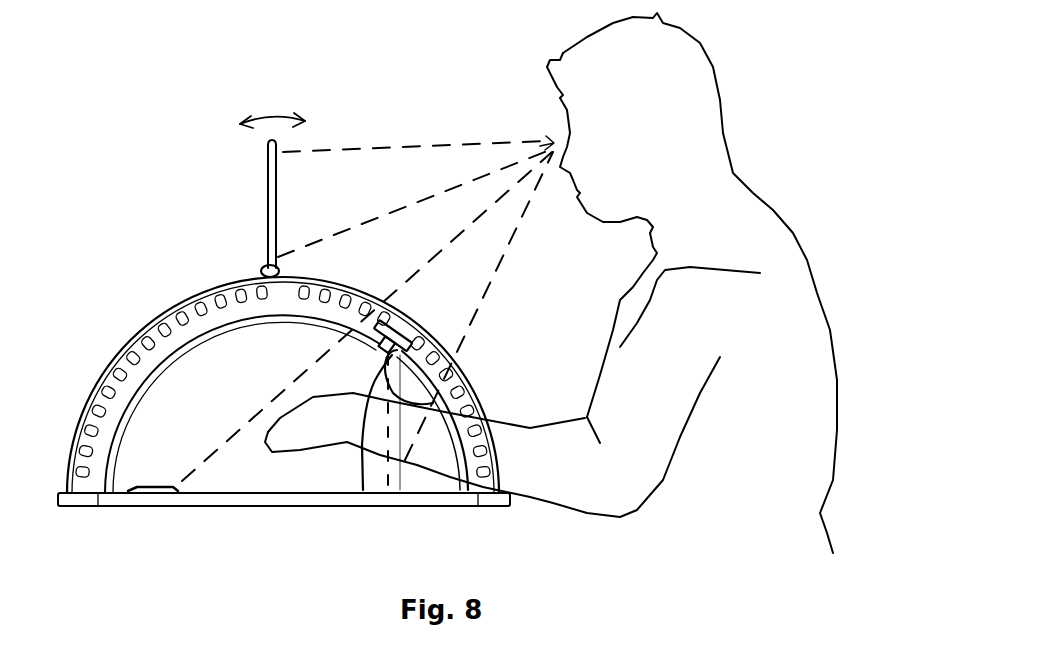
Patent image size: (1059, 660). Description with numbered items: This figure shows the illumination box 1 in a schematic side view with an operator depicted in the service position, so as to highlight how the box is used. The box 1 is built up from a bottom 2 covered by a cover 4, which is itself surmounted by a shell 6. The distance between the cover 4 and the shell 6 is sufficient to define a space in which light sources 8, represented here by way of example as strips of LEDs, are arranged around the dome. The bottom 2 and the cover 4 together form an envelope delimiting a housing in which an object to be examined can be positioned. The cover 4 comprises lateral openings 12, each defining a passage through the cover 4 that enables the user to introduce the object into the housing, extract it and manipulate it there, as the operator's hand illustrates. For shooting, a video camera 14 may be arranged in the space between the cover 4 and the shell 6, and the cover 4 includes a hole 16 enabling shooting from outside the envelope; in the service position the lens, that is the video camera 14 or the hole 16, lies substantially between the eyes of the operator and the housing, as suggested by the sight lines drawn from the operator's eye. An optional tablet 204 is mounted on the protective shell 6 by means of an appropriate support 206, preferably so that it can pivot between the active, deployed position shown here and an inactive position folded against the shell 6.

The illumination box 1 is at (133, 591).
The bottom 2 is at (222, 507).
The cover 4 is at (137, 397).
The shell 6 is at (140, 333).
The light sources 8 is at (204, 292).
The lateral openings 12 is at (363, 470).
The video camera 14 is at (470, 489).
The hole 16 is at (433, 403).
The tablet 204 is at (270, 167).
The support 206 is at (267, 267).